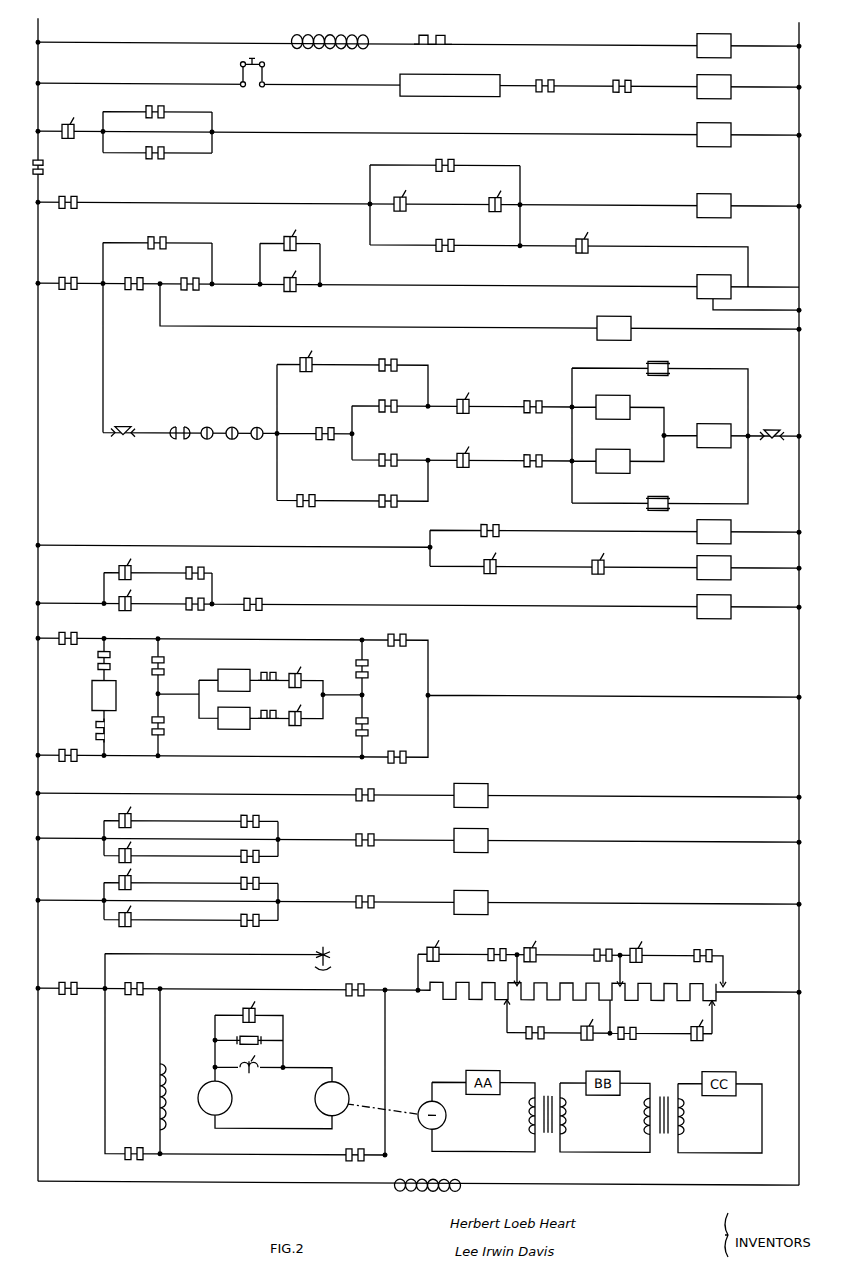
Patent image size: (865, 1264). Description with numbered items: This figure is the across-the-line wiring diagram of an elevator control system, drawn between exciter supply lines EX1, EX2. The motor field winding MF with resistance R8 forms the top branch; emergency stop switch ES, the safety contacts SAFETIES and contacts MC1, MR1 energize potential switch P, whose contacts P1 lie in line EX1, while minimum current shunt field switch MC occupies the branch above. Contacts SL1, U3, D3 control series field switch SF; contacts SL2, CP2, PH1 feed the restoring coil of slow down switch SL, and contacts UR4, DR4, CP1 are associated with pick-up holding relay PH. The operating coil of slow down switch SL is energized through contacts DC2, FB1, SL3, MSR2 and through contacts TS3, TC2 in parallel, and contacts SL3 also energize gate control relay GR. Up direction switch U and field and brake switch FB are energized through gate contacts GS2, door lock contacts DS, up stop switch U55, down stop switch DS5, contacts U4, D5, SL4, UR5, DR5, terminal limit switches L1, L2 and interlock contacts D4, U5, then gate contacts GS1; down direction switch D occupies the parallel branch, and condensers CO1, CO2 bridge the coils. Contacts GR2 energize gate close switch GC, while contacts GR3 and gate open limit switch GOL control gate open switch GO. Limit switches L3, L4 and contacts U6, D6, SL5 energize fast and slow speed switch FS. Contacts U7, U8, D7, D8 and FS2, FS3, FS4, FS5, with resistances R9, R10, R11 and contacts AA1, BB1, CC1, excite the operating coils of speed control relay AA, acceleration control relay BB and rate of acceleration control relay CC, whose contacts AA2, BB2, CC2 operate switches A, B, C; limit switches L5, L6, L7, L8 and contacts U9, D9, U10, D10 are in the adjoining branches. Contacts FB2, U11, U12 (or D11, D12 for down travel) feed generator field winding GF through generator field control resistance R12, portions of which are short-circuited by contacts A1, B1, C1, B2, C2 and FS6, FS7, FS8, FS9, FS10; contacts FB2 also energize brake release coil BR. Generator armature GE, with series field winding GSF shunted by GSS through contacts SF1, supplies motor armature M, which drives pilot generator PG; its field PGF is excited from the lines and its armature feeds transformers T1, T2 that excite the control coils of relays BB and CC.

The supply line EX1 is at (34, 590).
The supply line EX2 is at (794, 594).
The motor field winding MF is at (330, 33).
The resistance R8 is at (436, 33).
The emergency stop switch ES is at (264, 73).
The safety device contacts SAFETIES is at (450, 85).
The contacts of minimum current shunt field switch MC1 is at (550, 71).
The contacts of motor generator running switch MR1 is at (627, 71).
The minimum current shunt field switch MC is at (714, 46).
The potential switch P is at (714, 87).
The series field switch SF is at (714, 135).
The pick-up holding relay PH is at (714, 206).
The slow down switch SL is at (714, 287).
The gate control relay GR is at (614, 328).
The contacts of slow down switch SL1 is at (72, 124).
The contacts of up direction switch U3 is at (157, 104).
The contacts of down direction switch D3 is at (157, 145).
The contacts of potential switch P1 is at (44, 163).
The contacts of slow down switch SL2 is at (73, 190).
The contacts of pick-up holding relay PH1 is at (450, 151).
The contacts of up direction switch relay UR4 is at (398, 195).
The contacts of down direction switch relay DR4 is at (493, 196).
The contacts of call pick-up relay CP1 is at (450, 231).
The contacts of call pick-up relay CP2 is at (582, 236).
The contacts of motor generator starting switch relay MSR2 is at (162, 230).
The contacts of time cancelling relay TC2 is at (288, 234).
The contacts of time switch TS3 is at (287, 275).
The contacts of door contact switch DC2 is at (73, 271).
The contacts of field and brake switch FB1 is at (139, 271).
The contacts of slow down switch SL3 is at (195, 271).
The gate contacts GS2 is at (123, 422).
The door lock contacts DS is at (222, 422).
The up stop switch U55 is at (305, 356).
The contacts of up direction switch U4 is at (393, 351).
The contacts of slow down switch SL4 is at (330, 420).
The contacts of up direction switch relay UR5 is at (393, 392).
The contacts of down direction switch relay DR5 is at (393, 446).
The terminal limit switch L1 is at (465, 397).
The limit switch L2 is at (469, 452).
The contacts of down direction switch D4 is at (538, 392).
The contacts of up direction switch U5 is at (538, 447).
The down stop switch DS5 is at (311, 487).
The contacts of down direction switch D5 is at (393, 487).
The condenser CO1 is at (666, 357).
The condenser CO2 is at (666, 492).
The up direction switch U is at (613, 407).
The down direction switch D is at (613, 461).
The field and brake switch FB is at (714, 436).
The gate contacts GS1 is at (773, 425).
The contacts of gate control relay GR2 is at (492, 521).
The contacts of gate control relay GR3 is at (501, 558).
The gate open limit switch GOL is at (612, 558).
The gate close switch GC is at (714, 532).
The gate open switch GO is at (714, 568).
The fast and slow speed switch FS is at (714, 607).
The limit switch L3 is at (131, 564).
The contacts of up direction switch U6 is at (197, 565).
The limit switch L4 is at (131, 596).
The contacts of down direction switch D6 is at (190, 594).
The contacts of slow down switch SL5 is at (255, 596).
The contacts of up direction switch U7 is at (73, 627).
The contacts of speed control relay AA1 is at (109, 660).
The speed control relay AA is at (104, 695).
The resistance R11 is at (106, 731).
The contacts of fast and slow speed switch FS2 is at (163, 663).
The contacts of fast and slow speed switch FS4 is at (163, 725).
The acceleration control relay BB is at (234, 680).
The rate of acceleration control relay CC is at (234, 718).
The resistance R9 is at (268, 667).
The resistance R10 is at (271, 706).
The contacts of acceleration control relay BB1 is at (301, 672).
The contacts of rate of acceleration control relay CC1 is at (301, 710).
The contacts of down direction switch D7 is at (402, 627).
The contacts of fast and slow speed switch FS3 is at (367, 665).
The contacts of fast and slow speed switch FS5 is at (367, 723).
The contacts of up direction switch U8 is at (402, 744).
The contacts of down direction switch D8 is at (73, 744).
The contacts of speed control relay AA2 is at (367, 786).
The speed control switch A is at (471, 795).
The contacts of acceleration control relay BB2 is at (367, 831).
The acceleration control switch B is at (471, 840).
The contacts of rate of acceleration control relay CC2 is at (367, 893).
The rate of acceleration control switch C is at (471, 902).
The limit switch L5 is at (131, 812).
The contacts of up direction switch U9 is at (254, 812).
The limit switch L6 is at (131, 847).
The contacts of down direction switch D9 is at (254, 848).
The limit switch L7 is at (131, 874).
The contacts of up direction switch U10 is at (254, 874).
The limit switch L8 is at (131, 911).
The contacts of down direction switch D10 is at (254, 911).
The brake release coil BR is at (318, 949).
The contacts of speed control switch A1 is at (436, 945).
The contacts of fast and slow speed switch FS6 is at (502, 941).
The contacts of acceleration control switch B1 is at (537, 946).
The contacts of fast and slow speed switch FS7 is at (608, 941).
The contacts of rate of acceleration control switch C1 is at (643, 946).
The contacts of fast and slow speed switch FS8 is at (705, 945).
The generator field control resistance R12 is at (581, 977).
The contacts of field and brake switch FB2 is at (73, 977).
The contacts of up direction switch U11 is at (139, 977).
The contacts of down direction switch D11 is at (357, 981).
The contacts of acceleration control switch B2 is at (540, 1019).
The contacts of fast and slow speed switch FS9 is at (590, 1024).
The contacts of rate of acceleration control switch C2 is at (629, 1023).
The contacts of fast and slow speed switch FS10 is at (691, 1025).
The contacts of down direction switch D12 is at (139, 1142).
The contacts of up direction switch U12 is at (357, 1146).
The generator field winding GF is at (170, 1073).
The contacts of series field switch SF1 is at (254, 1008).
The series field shunt GSS is at (252, 1034).
The generator series field winding GSF is at (261, 1072).
The generator armature GE is at (203, 1111).
The hoisting motor armature M is at (344, 1086).
The pilot generator armature PG is at (446, 1113).
The transformer T1 is at (546, 1136).
The transformer T2 is at (664, 1136).
The pilot generator field winding PGF is at (428, 1176).